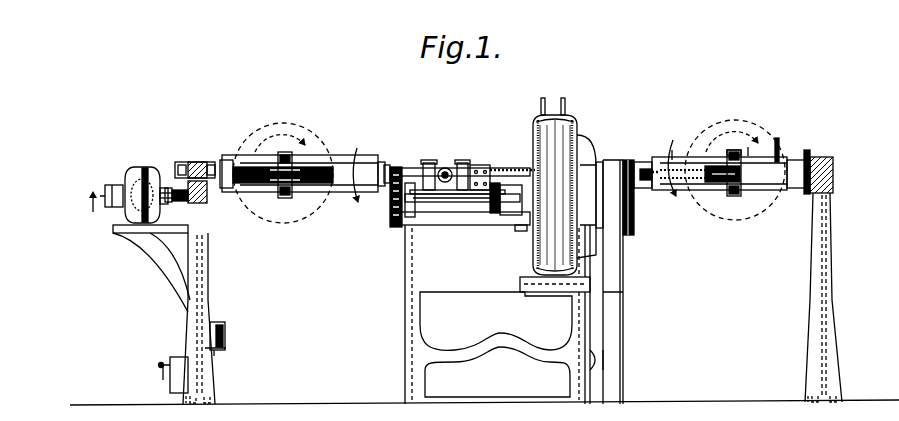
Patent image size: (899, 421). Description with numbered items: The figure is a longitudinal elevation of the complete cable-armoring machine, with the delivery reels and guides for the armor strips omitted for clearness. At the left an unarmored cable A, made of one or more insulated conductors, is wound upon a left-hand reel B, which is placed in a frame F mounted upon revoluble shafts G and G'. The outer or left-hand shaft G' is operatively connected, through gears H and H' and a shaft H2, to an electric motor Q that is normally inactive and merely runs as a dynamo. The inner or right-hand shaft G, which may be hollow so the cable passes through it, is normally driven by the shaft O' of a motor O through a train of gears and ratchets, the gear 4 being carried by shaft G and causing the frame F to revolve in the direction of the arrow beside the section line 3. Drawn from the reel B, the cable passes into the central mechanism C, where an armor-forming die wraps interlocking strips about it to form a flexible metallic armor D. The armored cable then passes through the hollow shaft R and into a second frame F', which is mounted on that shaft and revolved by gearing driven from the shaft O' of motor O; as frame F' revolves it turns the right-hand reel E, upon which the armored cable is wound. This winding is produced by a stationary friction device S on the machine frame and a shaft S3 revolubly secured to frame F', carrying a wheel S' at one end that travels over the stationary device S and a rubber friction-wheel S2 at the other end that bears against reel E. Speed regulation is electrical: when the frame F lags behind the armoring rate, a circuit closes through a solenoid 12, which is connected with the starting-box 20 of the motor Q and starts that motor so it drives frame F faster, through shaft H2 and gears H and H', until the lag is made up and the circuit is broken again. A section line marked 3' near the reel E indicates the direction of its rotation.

The electric motor Q is at (129, 172).
The outer shaft G' is at (194, 149).
The frame F is at (281, 170).
The gear H is at (198, 169).
The gear H' is at (221, 193).
The shaft H2 is at (177, 206).
The left-hand reel B is at (302, 186).
The section line 3 is at (363, 179).
The inner shaft G is at (393, 182).
The unarmored cable A is at (409, 167).
The metallic armor D is at (505, 167).
The motor O is at (568, 184).
The motor shaft O' is at (451, 225).
The central mechanism C is at (495, 314).
The hollow shaft R is at (636, 200).
The right-hand frame F' is at (716, 170).
The gear 4 is at (677, 146).
The right-hand reel E is at (720, 184).
The friction-wheel S2 is at (753, 139).
The section line 3' is at (746, 144).
The shaft S3 is at (784, 150).
The wheel S' is at (824, 162).
The stationary friction device S is at (815, 279).
The solenoid 12 is at (221, 350).
The starting-box 20 is at (176, 381).